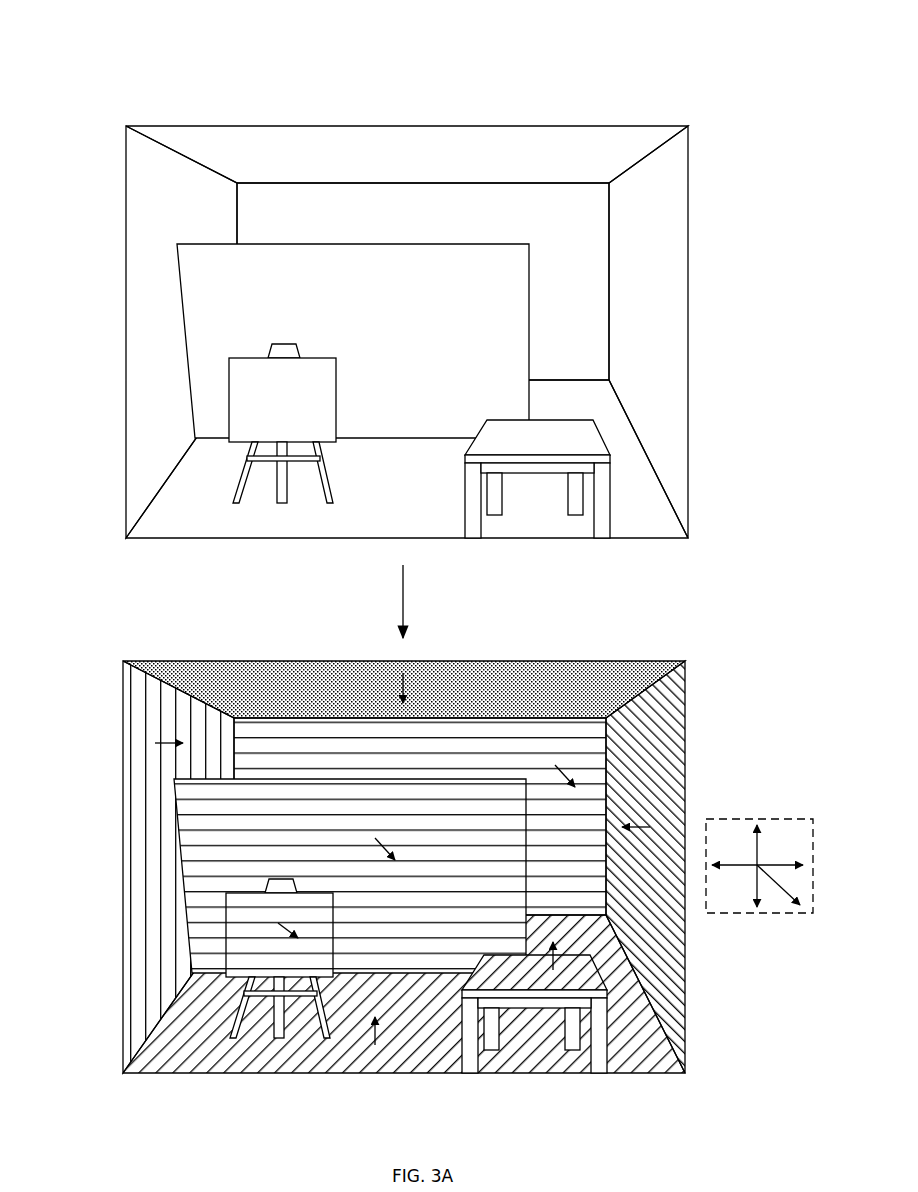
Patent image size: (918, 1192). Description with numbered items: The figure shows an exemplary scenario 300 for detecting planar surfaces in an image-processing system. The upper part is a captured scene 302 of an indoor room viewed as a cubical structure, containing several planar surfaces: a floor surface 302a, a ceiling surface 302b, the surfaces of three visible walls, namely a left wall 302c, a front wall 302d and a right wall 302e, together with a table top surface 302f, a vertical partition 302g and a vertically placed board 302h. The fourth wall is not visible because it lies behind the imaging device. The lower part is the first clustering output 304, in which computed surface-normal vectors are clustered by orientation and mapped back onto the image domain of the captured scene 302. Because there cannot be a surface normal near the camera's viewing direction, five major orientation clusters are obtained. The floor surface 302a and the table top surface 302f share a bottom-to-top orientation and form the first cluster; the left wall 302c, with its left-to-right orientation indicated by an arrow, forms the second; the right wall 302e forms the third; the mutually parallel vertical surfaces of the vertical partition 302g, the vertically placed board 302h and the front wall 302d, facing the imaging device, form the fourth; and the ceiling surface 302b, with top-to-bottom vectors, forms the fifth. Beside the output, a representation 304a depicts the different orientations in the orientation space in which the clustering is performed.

The exemplary scenario 300 is at (108, 68).
The captured scene 302 is at (505, 122).
The floor surface 302a is at (640, 510).
The ceiling surface 302b is at (626, 140).
The left wall surface 302c is at (147, 197).
The front wall surface 302d is at (585, 208).
The right wall surface 302e is at (668, 413).
The table top surface 302f is at (503, 442).
The vertical partition 302g is at (200, 278).
The vertically placed board 302h is at (257, 373).
The first clustering output 304 is at (683, 794).
The representation 304a is at (737, 819).